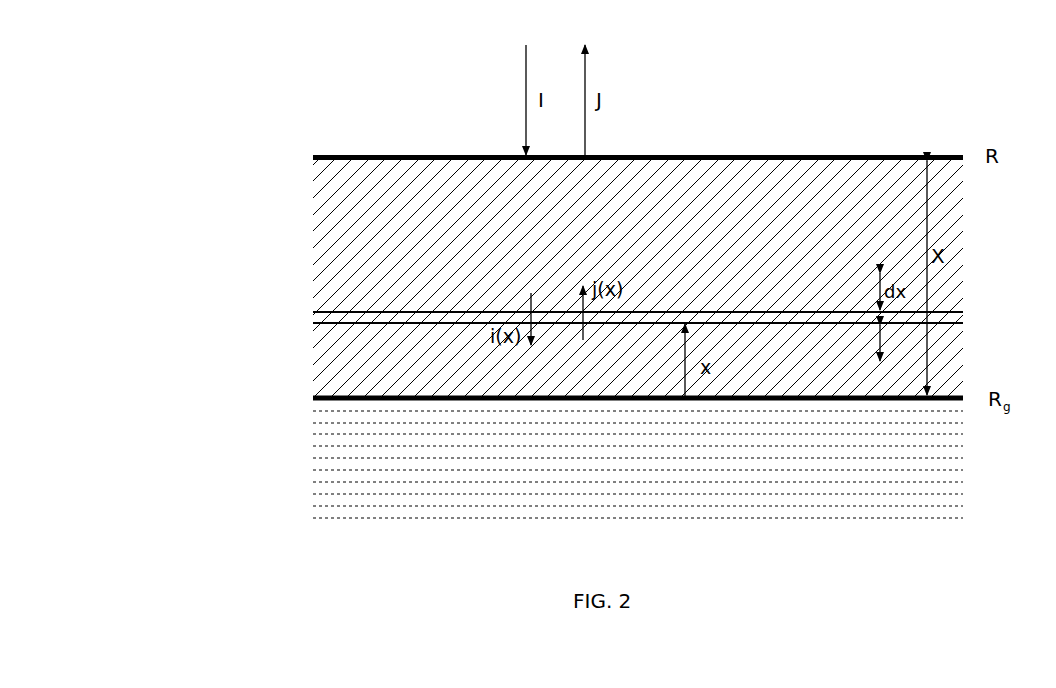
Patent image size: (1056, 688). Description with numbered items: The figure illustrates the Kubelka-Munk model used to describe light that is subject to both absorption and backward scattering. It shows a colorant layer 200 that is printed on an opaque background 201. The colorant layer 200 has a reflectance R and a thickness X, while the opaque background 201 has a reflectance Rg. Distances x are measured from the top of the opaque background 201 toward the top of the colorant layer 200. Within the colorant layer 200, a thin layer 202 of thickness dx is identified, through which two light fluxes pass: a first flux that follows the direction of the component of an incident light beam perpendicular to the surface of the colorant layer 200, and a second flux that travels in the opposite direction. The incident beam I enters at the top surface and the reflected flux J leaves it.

The colorant layer 200 is at (288, 155).
The opaque background 201 is at (288, 400).
The thin layer 202 is at (970, 310).